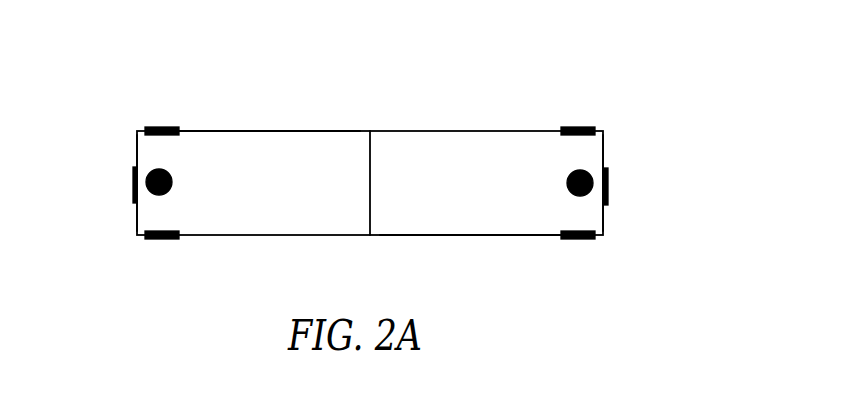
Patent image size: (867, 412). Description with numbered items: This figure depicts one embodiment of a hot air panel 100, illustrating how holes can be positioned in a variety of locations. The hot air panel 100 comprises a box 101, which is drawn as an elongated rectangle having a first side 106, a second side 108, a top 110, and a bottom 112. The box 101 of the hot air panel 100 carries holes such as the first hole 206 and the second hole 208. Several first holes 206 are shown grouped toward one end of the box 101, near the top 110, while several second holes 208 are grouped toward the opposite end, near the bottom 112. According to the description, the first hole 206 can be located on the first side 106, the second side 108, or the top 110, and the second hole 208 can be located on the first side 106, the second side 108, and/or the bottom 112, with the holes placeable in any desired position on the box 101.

The hot air panel 100 is at (485, 56).
The box 101 is at (278, 130).
The first side 106 is at (353, 130).
The second side 108 is at (432, 235).
The top 110 is at (605, 215).
The bottom 112 is at (137, 217).
The first hole 206 is at (585, 124).
The second hole 208 is at (152, 168).